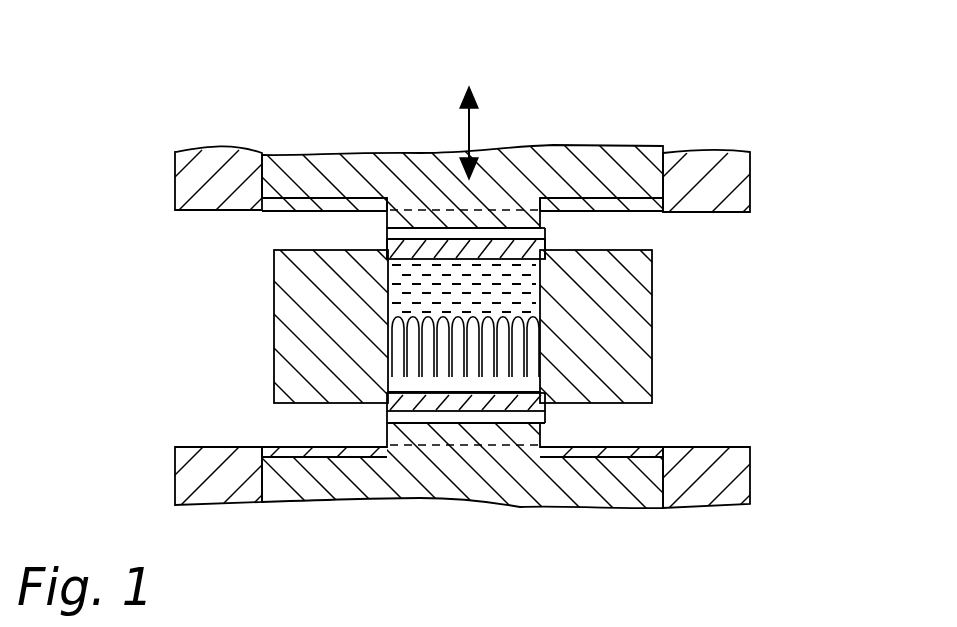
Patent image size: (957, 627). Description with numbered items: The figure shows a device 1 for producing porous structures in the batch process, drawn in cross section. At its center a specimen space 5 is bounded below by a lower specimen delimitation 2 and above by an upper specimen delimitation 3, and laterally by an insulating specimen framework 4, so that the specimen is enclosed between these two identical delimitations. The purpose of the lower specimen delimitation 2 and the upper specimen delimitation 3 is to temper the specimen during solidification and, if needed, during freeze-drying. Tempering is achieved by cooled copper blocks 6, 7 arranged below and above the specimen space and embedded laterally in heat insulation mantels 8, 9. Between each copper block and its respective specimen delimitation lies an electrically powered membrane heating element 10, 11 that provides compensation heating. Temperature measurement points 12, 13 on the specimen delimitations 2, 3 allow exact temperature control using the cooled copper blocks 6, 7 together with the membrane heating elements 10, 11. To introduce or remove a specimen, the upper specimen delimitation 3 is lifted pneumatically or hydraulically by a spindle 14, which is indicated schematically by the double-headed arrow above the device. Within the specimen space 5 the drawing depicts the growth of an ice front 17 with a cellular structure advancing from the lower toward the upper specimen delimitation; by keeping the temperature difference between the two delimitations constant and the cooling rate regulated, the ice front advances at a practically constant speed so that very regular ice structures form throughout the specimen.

The device 1 is at (757, 78).
The lower specimen delimitation 2 is at (427, 422).
The upper specimen delimitation 3 is at (392, 241).
The insulating specimen framework 4 is at (597, 327).
The specimen space 5 is at (468, 293).
The copper block 6 is at (567, 471).
The copper block 7 is at (566, 166).
The heat insulation mantel 8 is at (697, 487).
The heat insulation mantel 9 is at (700, 180).
The membrane heating element 10 is at (418, 421).
The membrane heating element 11 is at (471, 234).
The temperature measurement point 12 is at (502, 405).
The temperature measurement point 13 is at (498, 250).
The spindle 14 is at (466, 130).
The ice front 17 is at (545, 316).